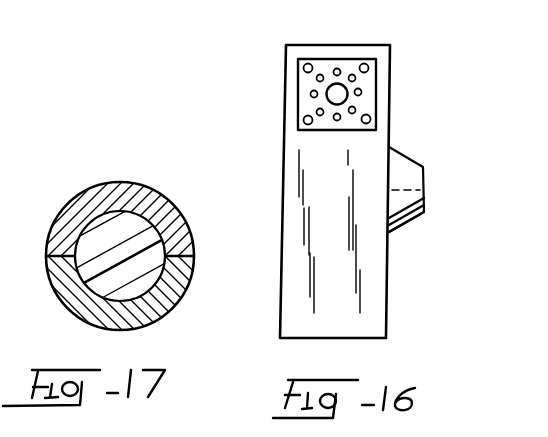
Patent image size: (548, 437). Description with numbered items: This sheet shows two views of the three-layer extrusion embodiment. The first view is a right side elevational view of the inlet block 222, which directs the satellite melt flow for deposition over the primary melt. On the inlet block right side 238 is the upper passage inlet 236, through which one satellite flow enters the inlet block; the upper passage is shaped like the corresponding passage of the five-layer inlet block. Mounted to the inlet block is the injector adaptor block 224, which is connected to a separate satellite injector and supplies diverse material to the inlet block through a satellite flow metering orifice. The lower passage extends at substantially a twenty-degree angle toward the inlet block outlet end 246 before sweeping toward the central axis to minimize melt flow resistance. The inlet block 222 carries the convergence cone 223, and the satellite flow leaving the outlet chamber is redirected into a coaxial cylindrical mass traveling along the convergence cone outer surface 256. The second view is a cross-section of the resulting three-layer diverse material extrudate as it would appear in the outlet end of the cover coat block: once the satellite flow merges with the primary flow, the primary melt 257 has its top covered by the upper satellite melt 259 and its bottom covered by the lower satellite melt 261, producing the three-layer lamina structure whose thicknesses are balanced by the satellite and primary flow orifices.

In FIG. 16, the inlet block 222 is at (406, 83).
In FIG. 16, the convergence cone 223 is at (396, 234).
In FIG. 16, the injector adaptor block 224 is at (377, 72).
In FIG. 16, the upper passage inlet 236 is at (333, 94).
In FIG. 16, the inlet block right side 238 is at (377, 304).
In FIG. 16, the inlet block outlet end 246 is at (389, 137).
In FIG. 16, the convergence cone outer surface 256 is at (410, 156).
In FIG. 17, the primary melt 257 is at (107, 233).
In FIG. 17, the upper satellite melt 259 is at (167, 208).
In FIG. 17, the lower satellite melt 261 is at (172, 297).